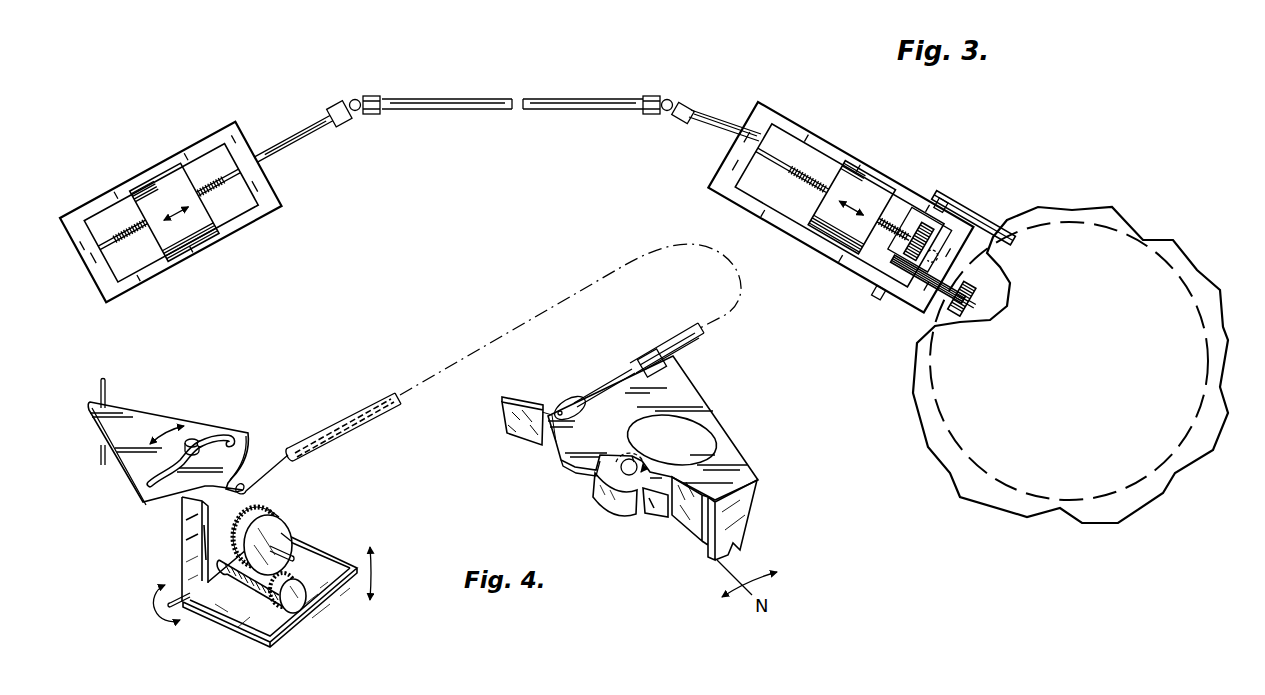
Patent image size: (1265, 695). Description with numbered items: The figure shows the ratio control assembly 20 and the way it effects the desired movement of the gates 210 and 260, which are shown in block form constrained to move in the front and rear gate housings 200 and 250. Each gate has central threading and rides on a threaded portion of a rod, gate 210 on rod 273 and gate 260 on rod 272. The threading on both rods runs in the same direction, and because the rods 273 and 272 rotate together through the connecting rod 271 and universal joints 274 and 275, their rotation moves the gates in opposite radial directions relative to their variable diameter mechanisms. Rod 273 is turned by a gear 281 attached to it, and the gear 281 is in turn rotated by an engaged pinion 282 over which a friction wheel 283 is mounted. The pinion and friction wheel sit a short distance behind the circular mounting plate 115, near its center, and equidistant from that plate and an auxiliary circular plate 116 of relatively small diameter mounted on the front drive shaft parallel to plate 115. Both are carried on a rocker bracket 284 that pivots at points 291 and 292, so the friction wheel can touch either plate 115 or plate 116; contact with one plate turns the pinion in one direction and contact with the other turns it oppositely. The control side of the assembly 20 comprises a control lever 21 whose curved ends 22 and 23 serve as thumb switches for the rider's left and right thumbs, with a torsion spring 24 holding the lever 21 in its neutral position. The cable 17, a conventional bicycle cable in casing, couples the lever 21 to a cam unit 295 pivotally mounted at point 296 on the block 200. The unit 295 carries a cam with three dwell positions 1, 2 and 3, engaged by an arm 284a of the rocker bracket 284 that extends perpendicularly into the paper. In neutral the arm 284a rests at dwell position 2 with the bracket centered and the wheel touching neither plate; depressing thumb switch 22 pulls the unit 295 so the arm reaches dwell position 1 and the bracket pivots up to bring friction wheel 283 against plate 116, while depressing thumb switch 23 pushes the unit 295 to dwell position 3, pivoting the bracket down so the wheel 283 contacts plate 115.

In FIG. 3, the rear gate housing 250 is at (213, 147).
In FIG. 3, the gate 260 is at (145, 188).
In FIG. 3, the rod 272 is at (313, 133).
In FIG. 3, the universal joint 275 is at (373, 95).
In FIG. 3, the connecting rod 271 is at (495, 102).
In FIG. 3, the universal joint 274 is at (650, 95).
In FIG. 3, the rod 273 is at (677, 118).
In FIG. 3, the front gate housing 200 is at (803, 135).
In FIG. 3, the gate 210 is at (870, 183).
In FIG. 3, the gear 281 is at (913, 223).
In FIG. 4, the gear 281 is at (283, 527).
In FIG. 3, the pinion 282 is at (923, 303).
In FIG. 4, the pinion 282 is at (247, 587).
In FIG. 3, the friction wheel 283 is at (957, 313).
In FIG. 4, the friction wheel 283 is at (280, 617).
In FIG. 3, the rocker bracket 284 is at (992, 227).
In FIG. 4, the rocker bracket 284 is at (337, 593).
In FIG. 3, the pivot point 291 is at (943, 196).
In FIG. 4, the pivot point 291 is at (152, 606).
In FIG. 3, the pivot point 292 is at (880, 297).
In FIG. 4, the pivot point 292 is at (310, 523).
In FIG. 3, the circular mounting plate 115 is at (1070, 210).
In FIG. 3, the auxiliary circular plate 116 is at (1127, 235).
In FIG. 4, the pivot point 296 is at (107, 393).
In FIG. 4, the cam unit 295 is at (170, 418).
In FIG. 4, the dwell position 1 is at (170, 464).
In FIG. 4, the dwell position 2 is at (174, 441).
In FIG. 4, the dwell position 3 is at (216, 432).
In FIG. 4, the cable 17 is at (255, 475).
In FIG. 4, the arm 284a is at (185, 543).
In FIG. 4, the ratio control assembly 20 is at (627, 520).
In FIG. 4, the curved end 22 is at (510, 430).
In FIG. 4, the control lever 21 is at (602, 445).
In FIG. 4, the torsion spring 24 is at (593, 470).
In FIG. 4, the curved end 23 is at (690, 517).